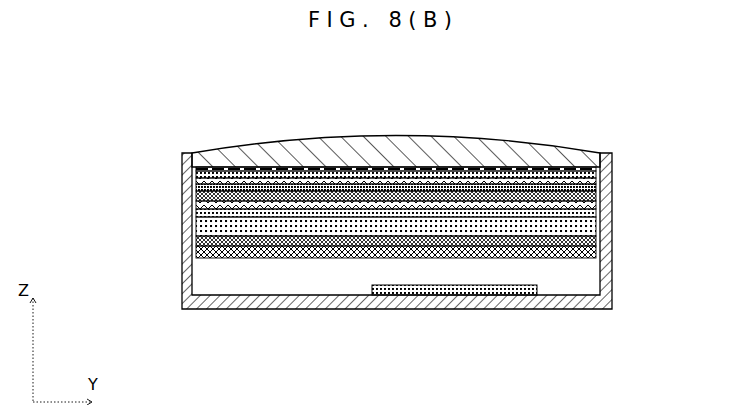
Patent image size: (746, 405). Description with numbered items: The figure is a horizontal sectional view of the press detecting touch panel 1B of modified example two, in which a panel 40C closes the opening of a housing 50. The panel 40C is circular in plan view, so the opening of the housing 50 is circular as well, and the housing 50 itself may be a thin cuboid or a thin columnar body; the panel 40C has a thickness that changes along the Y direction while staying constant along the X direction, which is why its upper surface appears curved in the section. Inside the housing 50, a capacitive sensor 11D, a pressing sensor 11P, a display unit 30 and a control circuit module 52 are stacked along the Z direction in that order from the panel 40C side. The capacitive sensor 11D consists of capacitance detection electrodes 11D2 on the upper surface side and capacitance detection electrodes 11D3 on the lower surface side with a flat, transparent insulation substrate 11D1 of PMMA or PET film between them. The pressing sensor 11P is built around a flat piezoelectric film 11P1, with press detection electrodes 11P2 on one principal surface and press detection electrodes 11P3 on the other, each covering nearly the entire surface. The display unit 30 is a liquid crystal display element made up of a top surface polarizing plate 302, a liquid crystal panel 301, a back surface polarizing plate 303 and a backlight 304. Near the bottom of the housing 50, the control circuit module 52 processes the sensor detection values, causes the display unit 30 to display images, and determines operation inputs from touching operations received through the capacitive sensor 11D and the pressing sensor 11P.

The press detecting touch panel 1B is at (658, 73).
The panel 40C is at (285, 137).
The housing 50 is at (594, 309).
The control circuit module 52 is at (502, 310).
The capacitive sensor 11D is at (108, 138).
The insulation substrate 11D1 is at (196, 175).
The capacitance detection electrodes 11D2 is at (196, 169).
The capacitance detection electrodes 11D3 is at (196, 181).
The pressing sensor 11P is at (108, 187).
The piezoelectric film 11P1 is at (196, 196).
The press detection electrodes 11P2 is at (196, 188).
The press detection electrodes 11P3 is at (196, 205).
The display unit 30 is at (667, 197).
The liquid crystal panel 301 is at (612, 226).
The top surface polarizing plate 302 is at (612, 213).
The back surface polarizing plate 303 is at (612, 241).
The backlight 304 is at (612, 252).